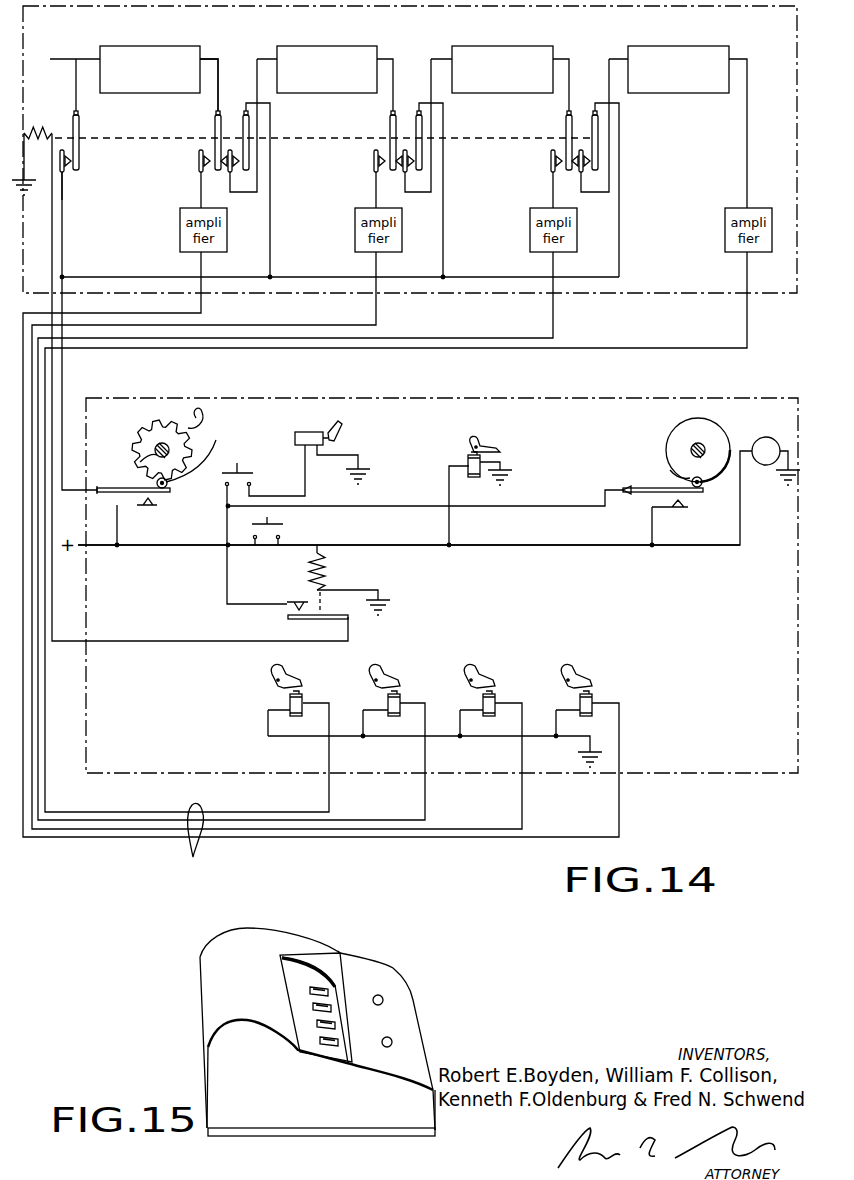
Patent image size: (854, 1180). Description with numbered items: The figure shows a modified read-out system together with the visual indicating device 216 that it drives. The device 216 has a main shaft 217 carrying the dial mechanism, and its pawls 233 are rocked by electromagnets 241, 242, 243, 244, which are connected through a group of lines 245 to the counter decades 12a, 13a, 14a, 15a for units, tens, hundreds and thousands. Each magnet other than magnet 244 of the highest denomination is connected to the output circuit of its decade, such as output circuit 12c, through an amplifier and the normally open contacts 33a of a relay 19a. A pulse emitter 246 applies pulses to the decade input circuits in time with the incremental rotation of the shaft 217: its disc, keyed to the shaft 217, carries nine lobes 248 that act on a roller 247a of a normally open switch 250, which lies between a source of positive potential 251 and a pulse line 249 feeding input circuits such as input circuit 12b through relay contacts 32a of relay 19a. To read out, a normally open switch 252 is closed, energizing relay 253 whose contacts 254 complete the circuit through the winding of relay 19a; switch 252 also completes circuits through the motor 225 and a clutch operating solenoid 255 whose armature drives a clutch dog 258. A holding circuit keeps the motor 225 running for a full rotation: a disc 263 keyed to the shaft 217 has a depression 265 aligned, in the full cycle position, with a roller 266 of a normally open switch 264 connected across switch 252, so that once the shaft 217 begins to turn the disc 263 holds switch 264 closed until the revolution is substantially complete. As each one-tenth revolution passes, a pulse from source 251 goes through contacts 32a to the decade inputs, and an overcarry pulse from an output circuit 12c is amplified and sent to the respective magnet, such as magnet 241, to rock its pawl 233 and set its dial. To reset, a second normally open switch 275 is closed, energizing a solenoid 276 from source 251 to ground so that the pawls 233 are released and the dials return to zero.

In FIG. 14, the counter decade 12a is at (180, 42).
In FIG. 14, the input circuit 12b is at (88, 58).
In FIG. 14, the output circuit 12c is at (221, 67).
In FIG. 14, the counter decade 13a is at (336, 34).
In FIG. 14, the counter decade 14a is at (508, 34).
In FIG. 14, the counter decade 15a is at (680, 34).
In FIG. 14, the relay 19a is at (48, 104).
In FIG. 14, the relay contacts 32a is at (70, 168).
In FIG. 14, the normally open contacts 33a is at (200, 152).
In FIG. 14, the pulse line 249 is at (65, 380).
In FIG. 14, the pulse emitter 246 is at (146, 432).
In FIG. 14, the lobes 248 is at (173, 420).
In FIG. 14, the roller 247a is at (212, 450).
In FIG. 14, the main shaft 217 is at (142, 466).
In FIG. 14, the normally opened switch 250 is at (158, 505).
In FIG. 14, the source of positive potential 251 is at (88, 548).
In FIG. 14, the second normally open switch 275 is at (257, 450).
In FIG. 14, the solenoid 276 is at (313, 412).
In FIG. 14, the normally opened switch 252 is at (285, 525).
In FIG. 14, the relay 253 is at (308, 581).
In FIG. 14, the contact 254 is at (288, 612).
In FIG. 14, the clutch operating solenoid 255 is at (468, 460).
In FIG. 14, the clutch dog 258 is at (483, 444).
In FIG. 14, the disc 263 is at (678, 432).
In FIG. 14, the depression 265 is at (672, 470).
In FIG. 14, the roller 266 is at (690, 484).
In FIG. 14, the normally open switch 264 is at (688, 508).
In FIG. 14, the motor 225 is at (772, 433).
In FIG. 14, the electromagnet 241 is at (598, 700).
In FIG. 14, the electromagnet 242 is at (496, 700).
In FIG. 14, the relay 243 is at (400, 700).
In FIG. 14, the electromagnet 244 is at (302, 700).
In FIG. 14, the pawl 233 is at (572, 670).
In FIG. 14, the group of lines 245 is at (186, 843).
In FIG. 15, the device 216 is at (357, 944).